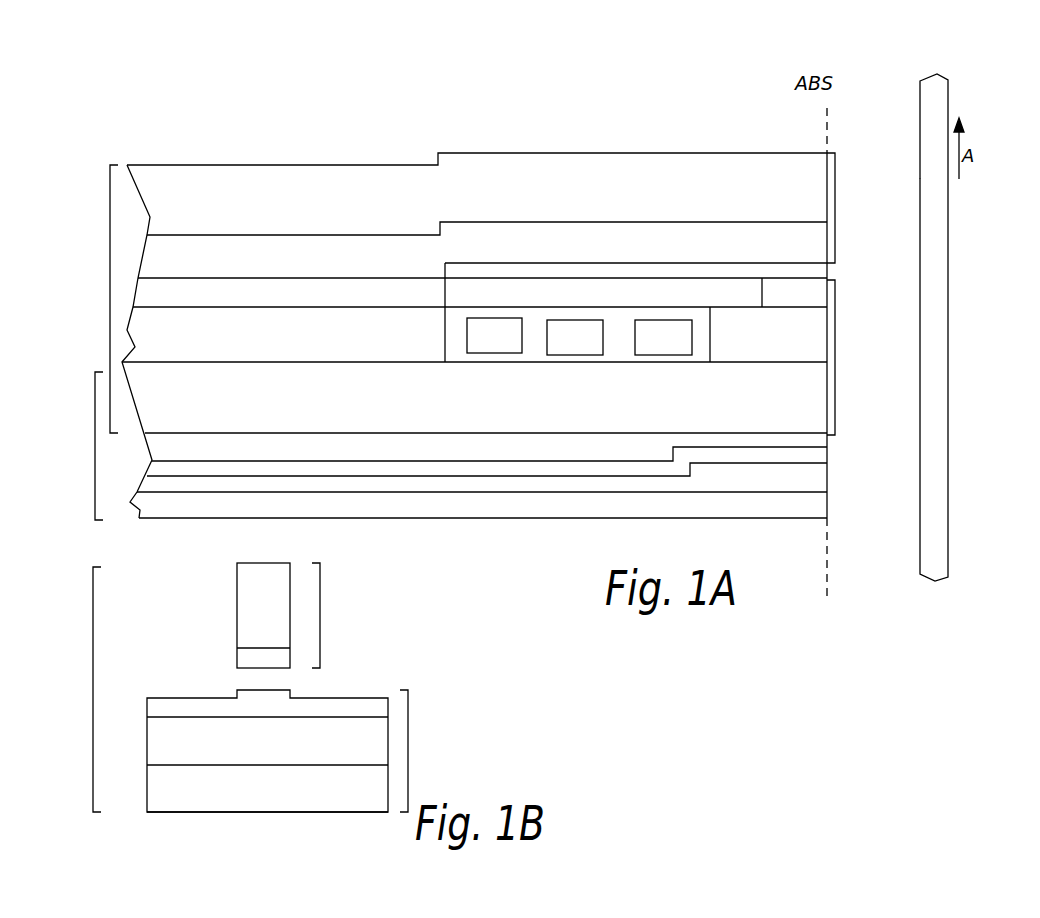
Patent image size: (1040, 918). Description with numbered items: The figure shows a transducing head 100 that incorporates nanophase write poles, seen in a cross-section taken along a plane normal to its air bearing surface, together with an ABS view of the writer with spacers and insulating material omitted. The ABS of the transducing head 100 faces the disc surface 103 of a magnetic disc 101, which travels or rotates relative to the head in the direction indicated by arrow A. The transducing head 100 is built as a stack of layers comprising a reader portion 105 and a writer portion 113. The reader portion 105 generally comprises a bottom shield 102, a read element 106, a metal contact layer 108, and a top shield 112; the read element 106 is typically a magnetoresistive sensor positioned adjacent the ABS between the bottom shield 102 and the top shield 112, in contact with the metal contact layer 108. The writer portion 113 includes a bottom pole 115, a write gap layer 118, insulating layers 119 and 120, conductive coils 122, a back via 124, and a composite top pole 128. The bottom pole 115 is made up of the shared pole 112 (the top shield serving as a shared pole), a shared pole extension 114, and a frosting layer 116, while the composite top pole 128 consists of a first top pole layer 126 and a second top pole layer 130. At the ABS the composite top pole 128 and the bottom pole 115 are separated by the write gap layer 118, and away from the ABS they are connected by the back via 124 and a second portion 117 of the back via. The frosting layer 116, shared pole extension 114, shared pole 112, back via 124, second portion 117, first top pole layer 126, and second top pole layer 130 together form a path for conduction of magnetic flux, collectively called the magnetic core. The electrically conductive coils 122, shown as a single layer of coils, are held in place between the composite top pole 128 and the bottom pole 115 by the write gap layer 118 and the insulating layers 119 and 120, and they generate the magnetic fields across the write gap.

In FIG. 1A, the transducing head 100 is at (157, 134).
In FIG. 1A, the magnetic disc 101 is at (940, 248).
In FIG. 1A, the bottom shield 102 is at (477, 517).
In FIG. 1A, the disc surface 103 is at (920, 178).
In FIG. 1A, the reader portion 105 is at (95, 451).
In FIG. 1A, the read element 106 is at (812, 470).
In FIG. 1A, the metal contact layer 108 is at (812, 455).
In FIG. 1A, the top shield 112 is at (557, 407).
In FIG. 1B, the top shield 112 is at (286, 799).
In FIG. 1A, the writer portion 113 is at (110, 300).
In FIG. 1B, the writer portion 113 is at (93, 692).
In FIG. 1A, the shared pole extension 114 is at (780, 344).
In FIG. 1B, the shared pole extension 114 is at (286, 749).
In FIG. 1A, the bottom pole 115 is at (835, 357).
In FIG. 1B, the bottom pole 115 is at (408, 752).
In FIG. 1A, the frosting layer 116 is at (818, 307).
In FIG. 1B, the frosting layer 116 is at (185, 708).
In FIG. 1A, the second portion of the back via 117 is at (272, 297).
In FIG. 1A, the write gap layer 118 is at (812, 269).
In FIG. 1A, the insulating layer 119 is at (528, 325).
In FIG. 1A, the insulating layer 120 is at (658, 307).
In FIG. 1A, the conductive coils 122 is at (596, 349).
In FIG. 1A, the back via 124 is at (287, 342).
In FIG. 1A, the first top pole layer 126 is at (673, 254).
In FIG. 1B, the first top pole layer 126 is at (248, 660).
In FIG. 1A, the composite top pole 128 is at (835, 209).
In FIG. 1B, the composite top pole 128 is at (320, 618).
In FIG. 1A, the second top pole layer 130 is at (643, 194).
In FIG. 1B, the second top pole layer 130 is at (289, 622).